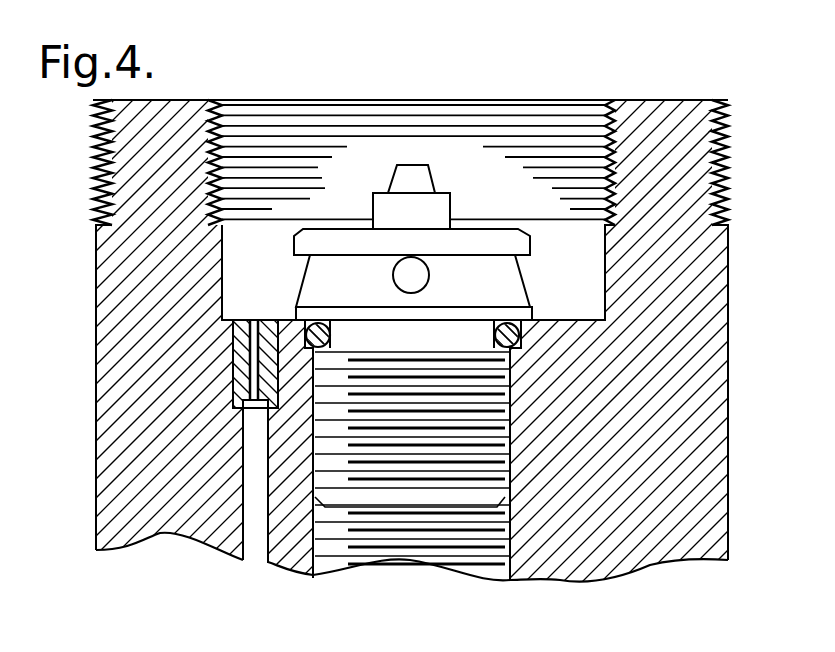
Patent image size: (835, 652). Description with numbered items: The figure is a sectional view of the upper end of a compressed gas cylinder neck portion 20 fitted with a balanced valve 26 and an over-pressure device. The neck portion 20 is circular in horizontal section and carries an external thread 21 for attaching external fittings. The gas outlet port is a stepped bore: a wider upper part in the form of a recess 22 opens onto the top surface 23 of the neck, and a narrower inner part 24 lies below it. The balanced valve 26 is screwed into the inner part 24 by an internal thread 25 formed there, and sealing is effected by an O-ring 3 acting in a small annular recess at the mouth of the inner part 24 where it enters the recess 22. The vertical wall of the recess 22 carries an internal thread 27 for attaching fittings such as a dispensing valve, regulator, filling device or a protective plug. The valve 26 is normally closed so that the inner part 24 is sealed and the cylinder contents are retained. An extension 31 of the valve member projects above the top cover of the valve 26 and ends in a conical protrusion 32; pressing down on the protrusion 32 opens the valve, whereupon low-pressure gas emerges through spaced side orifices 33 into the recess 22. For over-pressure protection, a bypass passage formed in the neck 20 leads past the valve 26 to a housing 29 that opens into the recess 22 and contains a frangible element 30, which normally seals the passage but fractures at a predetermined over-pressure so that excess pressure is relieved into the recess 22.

The O-ring 3 is at (517, 338).
The neck portion 20 is at (731, 349).
The external thread 21 is at (723, 155).
The recess 22 is at (355, 118).
The top surface 23 is at (660, 99).
The inner part 24 is at (493, 556).
The internal thread 25 is at (503, 520).
The balanced valve 26 is at (365, 458).
The internal thread 27 is at (224, 127).
The housing 29 is at (230, 352).
The frangible element 30 is at (252, 404).
The extension of the valve member 31 is at (437, 207).
The conical protrusion 32 is at (415, 176).
The side orifices 33 is at (403, 272).